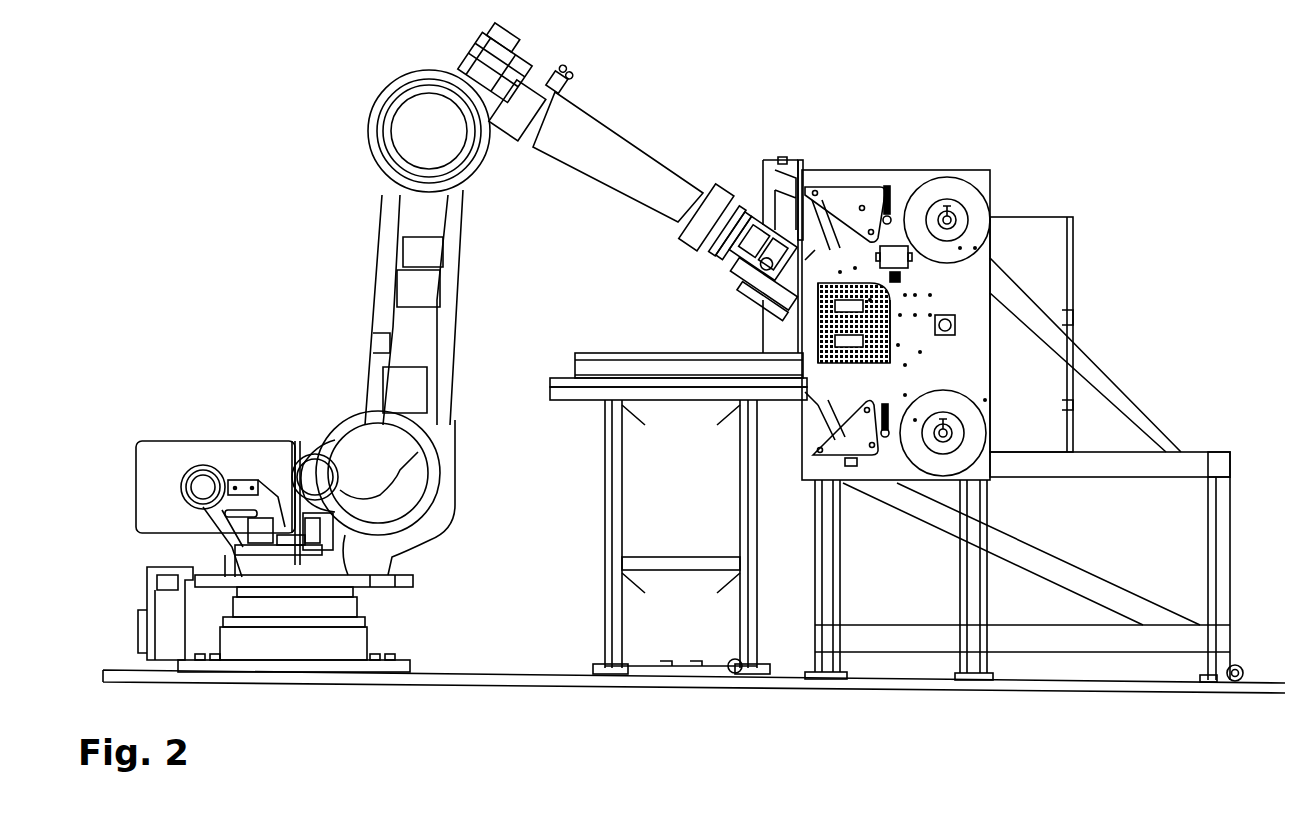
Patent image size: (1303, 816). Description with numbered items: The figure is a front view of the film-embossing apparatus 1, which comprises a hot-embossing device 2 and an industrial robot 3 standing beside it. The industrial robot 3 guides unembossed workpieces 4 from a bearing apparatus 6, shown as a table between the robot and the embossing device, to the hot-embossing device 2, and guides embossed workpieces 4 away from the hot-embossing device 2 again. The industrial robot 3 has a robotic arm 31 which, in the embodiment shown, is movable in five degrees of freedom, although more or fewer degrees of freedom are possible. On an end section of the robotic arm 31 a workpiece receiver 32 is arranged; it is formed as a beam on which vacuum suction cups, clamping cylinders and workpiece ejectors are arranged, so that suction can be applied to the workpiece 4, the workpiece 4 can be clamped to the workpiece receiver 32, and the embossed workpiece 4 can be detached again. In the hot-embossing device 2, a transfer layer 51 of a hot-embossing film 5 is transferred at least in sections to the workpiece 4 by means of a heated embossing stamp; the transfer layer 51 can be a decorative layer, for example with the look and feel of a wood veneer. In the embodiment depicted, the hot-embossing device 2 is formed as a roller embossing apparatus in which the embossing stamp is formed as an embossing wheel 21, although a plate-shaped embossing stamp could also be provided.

The film-embossing apparatus 1 is at (1198, 67).
The hot-embossing device 2 is at (1040, 149).
The industrial robot 3 is at (258, 252).
The robotic arm 31 is at (613, 138).
The workpiece receiver 32 is at (765, 160).
The workpiece 4 is at (798, 160).
The hot-embossing film 5 is at (987, 375).
The transfer layer 51 is at (892, 202).
The bearing apparatus 6 is at (590, 463).
The embossing wheel 21 is at (768, 317).